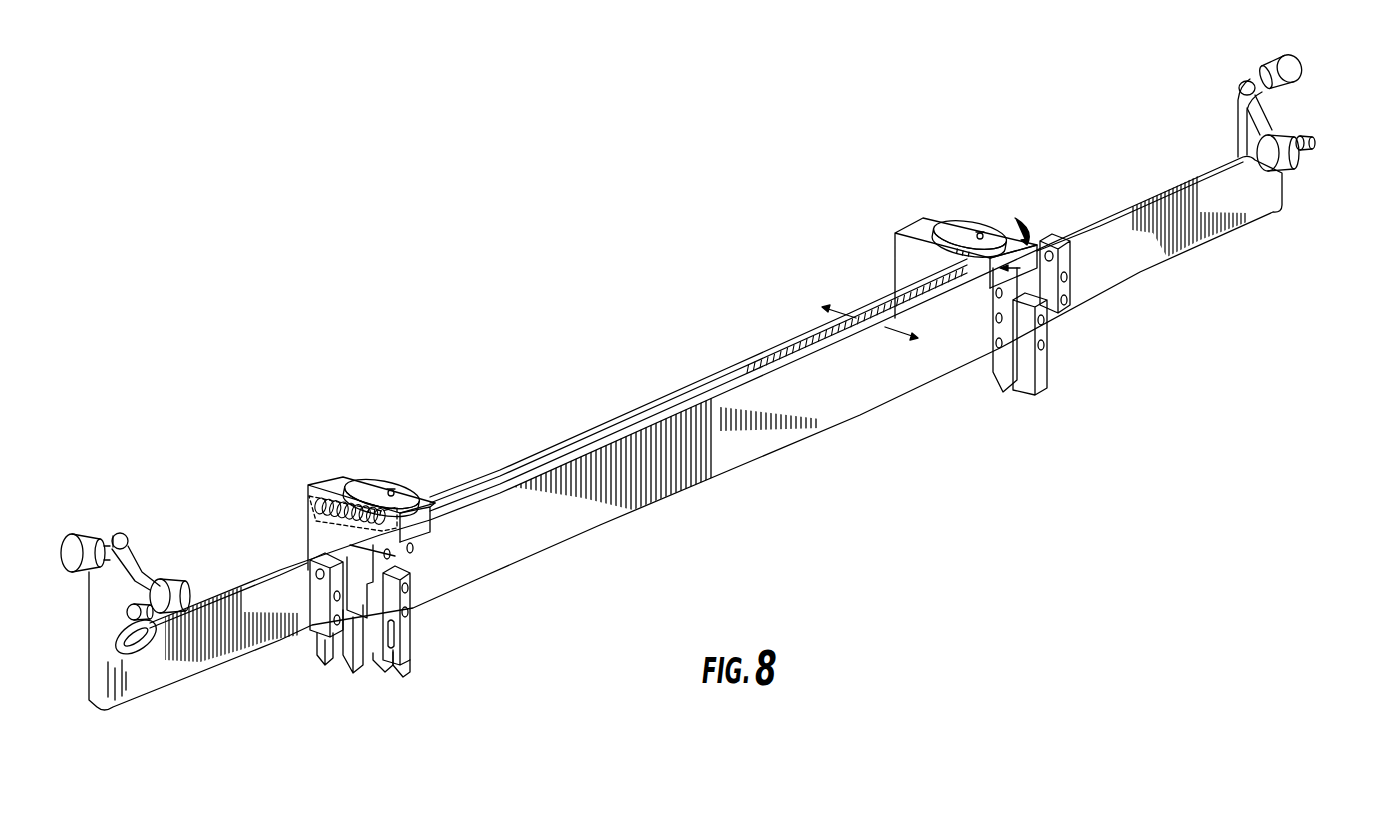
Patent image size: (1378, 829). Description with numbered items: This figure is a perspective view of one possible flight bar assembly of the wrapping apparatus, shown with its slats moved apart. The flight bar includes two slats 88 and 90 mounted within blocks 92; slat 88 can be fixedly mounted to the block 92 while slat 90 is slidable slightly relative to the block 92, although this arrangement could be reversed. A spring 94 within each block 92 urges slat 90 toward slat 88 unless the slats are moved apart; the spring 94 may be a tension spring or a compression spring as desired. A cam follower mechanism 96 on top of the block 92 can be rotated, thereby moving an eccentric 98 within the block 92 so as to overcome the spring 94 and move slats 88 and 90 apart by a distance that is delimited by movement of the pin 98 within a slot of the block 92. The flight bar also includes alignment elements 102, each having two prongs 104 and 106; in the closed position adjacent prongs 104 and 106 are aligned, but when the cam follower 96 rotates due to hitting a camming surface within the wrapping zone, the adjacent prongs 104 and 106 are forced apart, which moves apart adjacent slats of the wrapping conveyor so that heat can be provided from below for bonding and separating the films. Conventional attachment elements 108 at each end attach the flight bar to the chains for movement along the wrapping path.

The slat 88 is at (790, 347).
The slat 90 is at (878, 397).
The block 92 is at (330, 478).
The spring 94 is at (317, 500).
The cam follower mechanism 96 is at (383, 477).
The eccentric 98 is at (423, 502).
The alignment element 102 is at (315, 655).
The prong 104 is at (320, 660).
The prong 106 is at (353, 668).
The attachment element 108 is at (137, 518).